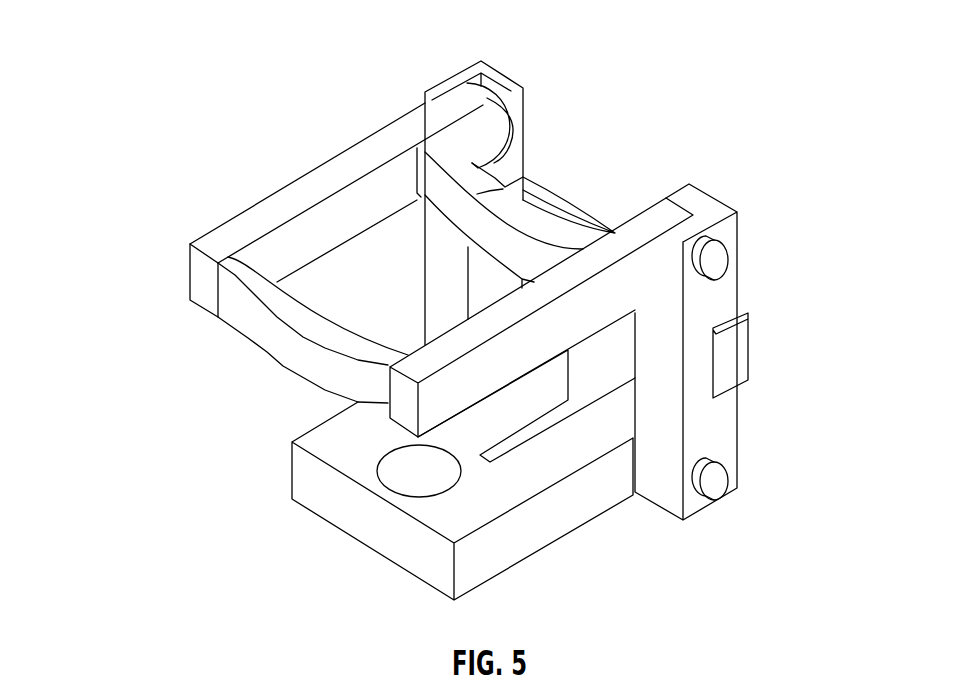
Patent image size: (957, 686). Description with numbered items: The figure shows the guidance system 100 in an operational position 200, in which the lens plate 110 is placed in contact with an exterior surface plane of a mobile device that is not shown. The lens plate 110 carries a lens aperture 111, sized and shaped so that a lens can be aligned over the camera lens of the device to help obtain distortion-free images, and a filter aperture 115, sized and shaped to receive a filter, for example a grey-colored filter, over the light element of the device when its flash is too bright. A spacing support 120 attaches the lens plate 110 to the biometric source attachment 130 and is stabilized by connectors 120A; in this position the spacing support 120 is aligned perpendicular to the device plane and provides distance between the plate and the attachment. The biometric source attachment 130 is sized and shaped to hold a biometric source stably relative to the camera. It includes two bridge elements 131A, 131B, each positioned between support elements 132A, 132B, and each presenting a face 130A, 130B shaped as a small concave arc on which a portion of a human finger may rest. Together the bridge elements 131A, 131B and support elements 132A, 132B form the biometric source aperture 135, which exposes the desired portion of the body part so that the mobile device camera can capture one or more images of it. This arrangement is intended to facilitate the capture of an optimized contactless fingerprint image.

The operational position 200 is at (130, 68).
The system 100 is at (209, 389).
The lens plate 110 is at (282, 508).
The lens aperture 111 is at (413, 488).
The filter aperture 115 is at (583, 397).
The spacing support 120 is at (740, 357).
The connector 120A is at (720, 262).
The biometric source attachment 130 is at (172, 274).
The face 130A is at (250, 283).
The face 130B is at (447, 165).
The bridge element 131A is at (258, 318).
The bridge element 131B is at (523, 177).
The support element 132A is at (287, 215).
The support element 132B is at (627, 297).
The biometric source aperture 135 is at (368, 258).